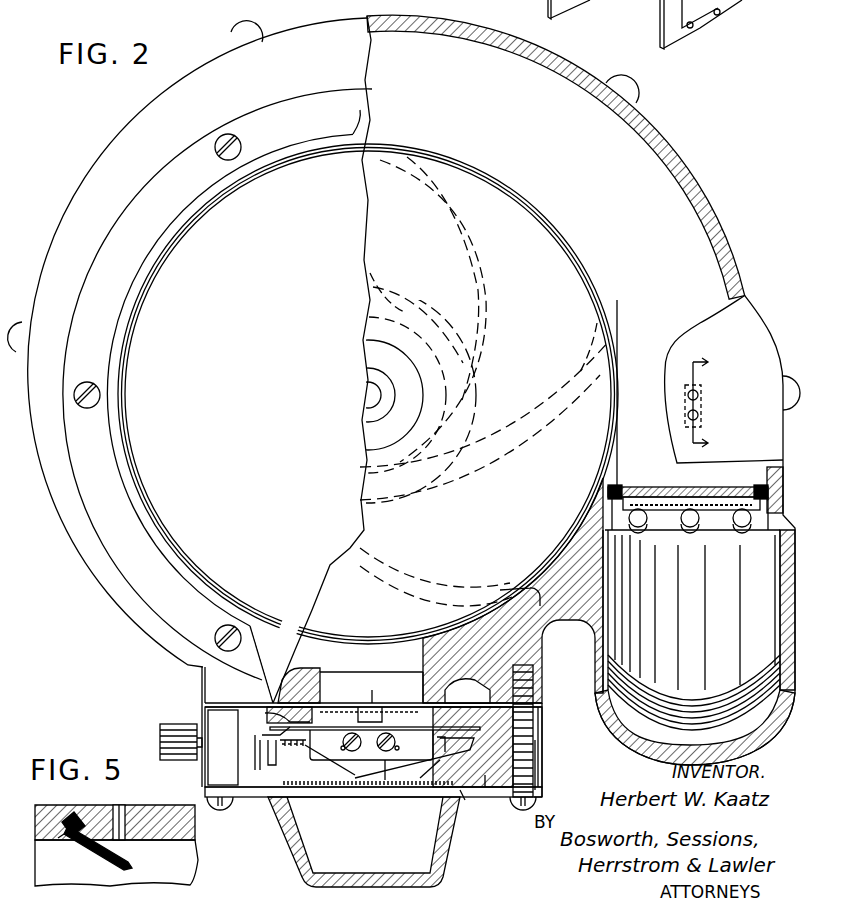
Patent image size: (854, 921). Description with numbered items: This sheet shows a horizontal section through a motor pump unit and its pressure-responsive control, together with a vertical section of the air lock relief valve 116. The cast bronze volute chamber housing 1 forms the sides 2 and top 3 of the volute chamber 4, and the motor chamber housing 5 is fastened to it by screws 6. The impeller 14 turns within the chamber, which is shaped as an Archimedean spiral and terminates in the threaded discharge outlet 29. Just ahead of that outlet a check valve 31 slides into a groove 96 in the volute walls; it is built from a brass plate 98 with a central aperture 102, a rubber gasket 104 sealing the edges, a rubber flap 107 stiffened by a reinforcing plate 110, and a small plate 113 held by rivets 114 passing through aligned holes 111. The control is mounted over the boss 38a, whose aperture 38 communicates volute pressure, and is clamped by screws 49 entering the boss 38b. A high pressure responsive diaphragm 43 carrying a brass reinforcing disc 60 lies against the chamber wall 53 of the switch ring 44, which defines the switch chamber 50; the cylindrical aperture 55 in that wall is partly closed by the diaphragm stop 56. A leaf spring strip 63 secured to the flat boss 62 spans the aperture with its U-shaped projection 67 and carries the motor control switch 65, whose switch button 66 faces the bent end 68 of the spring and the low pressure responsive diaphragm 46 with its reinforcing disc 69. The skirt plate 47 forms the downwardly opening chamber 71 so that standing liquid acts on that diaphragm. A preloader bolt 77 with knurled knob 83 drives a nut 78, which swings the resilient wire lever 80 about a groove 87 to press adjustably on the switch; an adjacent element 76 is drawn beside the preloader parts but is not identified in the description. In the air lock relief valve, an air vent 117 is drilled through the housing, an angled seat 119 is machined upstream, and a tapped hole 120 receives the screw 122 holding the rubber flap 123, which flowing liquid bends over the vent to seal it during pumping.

In FIG. 2, the volute chamber housing 1 is at (147, 110).
In FIG. 2, the side walls of the volute chamber 2 is at (648, 125).
In FIG. 2, the top of the volute chamber 3 is at (112, 168).
In FIG. 2, the volute chamber 4 is at (414, 72).
In FIG. 2, the motor chamber housing 5 is at (186, 287).
In FIG. 2, the screws 6 is at (215, 152).
In FIG. 2, the impeller 14 is at (412, 234).
In FIG. 2, the discharge outlet 29 is at (752, 728).
In FIG. 2, the check valve 31 is at (604, 490).
In FIG. 2, the aperture 38 is at (380, 682).
In FIG. 2, the boss 38a is at (467, 691).
In FIG. 2, the boss 38b is at (545, 700).
In FIG. 2, the high pressure responsive diaphragm 43 is at (535, 716).
In FIG. 2, the switch ring 44 is at (541, 728).
In FIG. 2, the low pressure responsive diaphragm 46 is at (540, 757).
In FIG. 2, the skirt plate 47 is at (458, 816).
In FIG. 2, the screws 49 is at (540, 792).
In FIG. 2, the switch chamber 50 is at (486, 777).
In FIG. 2, the chamber wall 53 is at (372, 738).
In FIG. 2, the aperture 55 is at (385, 711).
In FIG. 2, the diaphragm stop 56 is at (420, 700).
In FIG. 2, the reinforcing disc 60 is at (372, 700).
In FIG. 2, the flat boss 62 is at (268, 716).
In FIG. 2, the spring strip 63 is at (453, 743).
In FIG. 2, the motor control switch 65 is at (375, 743).
In FIG. 2, the switch button 66 is at (366, 786).
In FIG. 2, the U-shaped projection 67 is at (400, 705).
In FIG. 2, the bent end of spring 68 is at (453, 760).
In FIG. 2, the reinforcing disc 69 is at (434, 786).
In FIG. 2, the chamber 71 is at (455, 845).
In FIG. 2, the pin 76 is at (256, 758).
In FIG. 2, the bolt 77 is at (302, 760).
In FIG. 2, the nut 78 is at (274, 765).
In FIG. 2, the resilient lever 80 is at (348, 782).
In FIG. 2, the knob 83 is at (160, 740).
In FIG. 2, the groove 87 is at (265, 740).
In FIG. 2, the groove 96 is at (776, 490).
In FIG. 2, the plate 98 is at (612, 488).
In FIG. 2, the aperture 102 is at (735, 497).
In FIG. 2, the gasket 104 is at (638, 492).
In FIG. 2, the flap 107 is at (745, 514).
In FIG. 2, the reinforcing plate 110 is at (700, 512).
In FIG. 2, the aligned holes 111 is at (720, 14).
In FIG. 2, the plate 113 is at (660, 512).
In FIG. 2, the rivets 114 is at (628, 540).
In FIG. 2, the air lock relief valve 116 is at (699, 413).
In FIG. 5, the air vent 117 is at (122, 842).
In FIG. 5, the seat 119 is at (68, 820).
In FIG. 5, the hole 120 is at (104, 808).
In FIG. 5, the screw 122 is at (66, 840).
In FIG. 5, the flap 123 is at (118, 864).